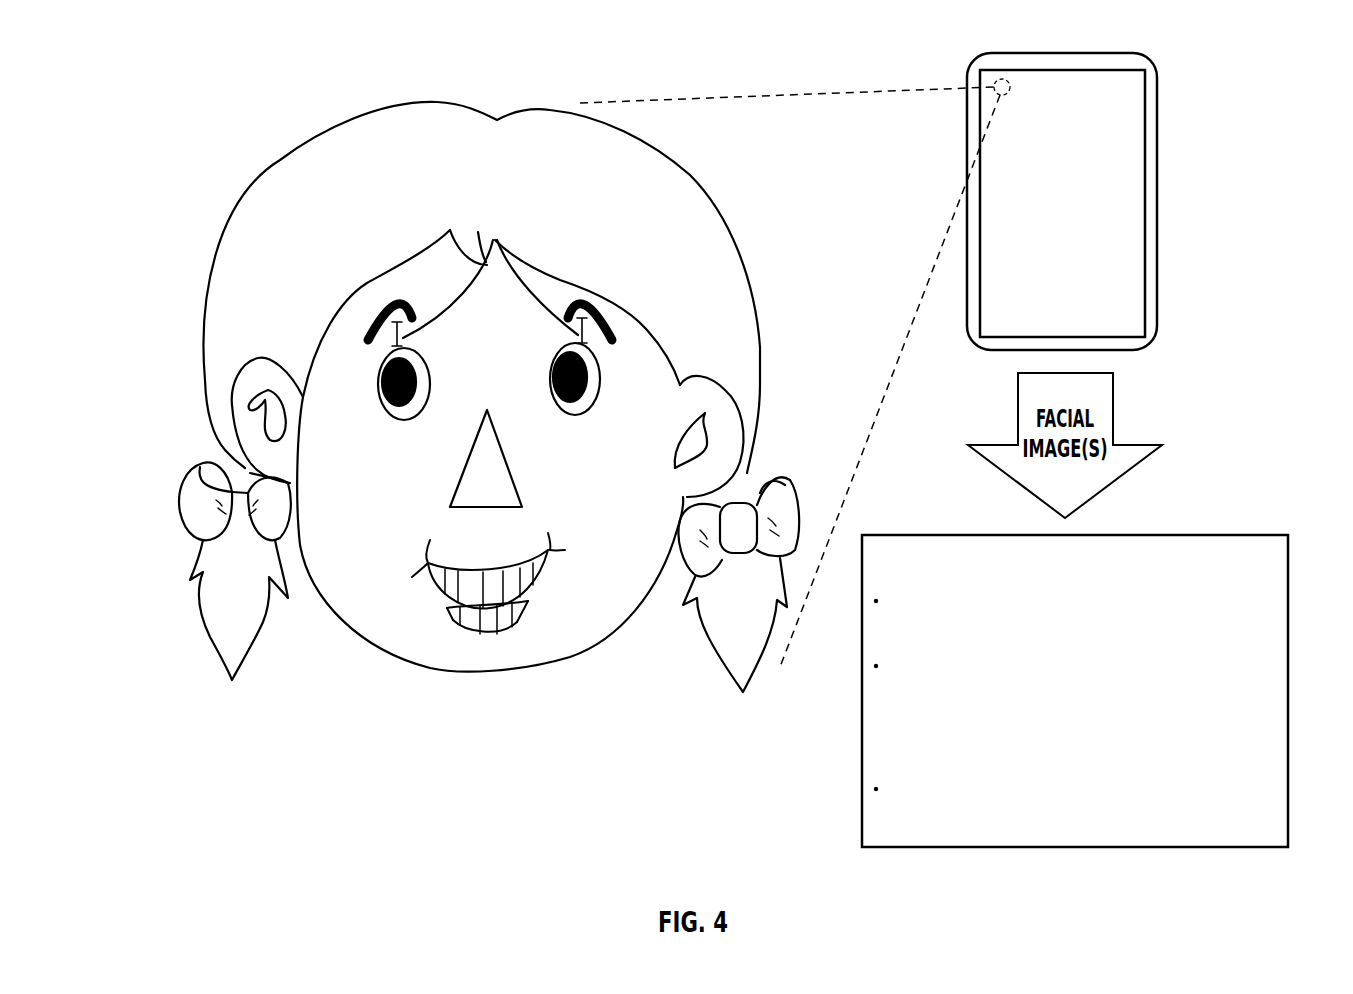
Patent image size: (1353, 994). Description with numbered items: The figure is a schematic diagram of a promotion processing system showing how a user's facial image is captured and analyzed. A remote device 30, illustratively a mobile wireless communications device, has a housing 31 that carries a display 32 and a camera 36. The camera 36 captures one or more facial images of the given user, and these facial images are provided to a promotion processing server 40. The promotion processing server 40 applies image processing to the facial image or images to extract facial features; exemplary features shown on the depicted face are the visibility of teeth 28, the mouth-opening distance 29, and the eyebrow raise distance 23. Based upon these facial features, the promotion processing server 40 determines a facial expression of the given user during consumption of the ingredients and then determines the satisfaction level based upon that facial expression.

The eyebrow raise distance 23 is at (493, 240).
The visibility of teeth 28 is at (467, 590).
The mouth-opening distance 29 is at (533, 588).
The remote device 30 is at (1047, 182).
The housing 31 is at (1063, 53).
The display 32 is at (1128, 104).
The camera 36 is at (994, 93).
The promotion processing server 40 is at (860, 686).